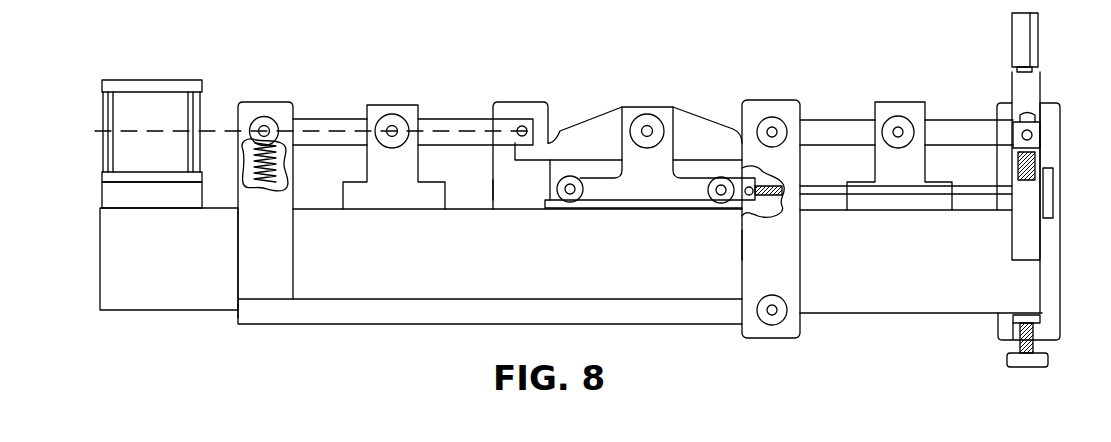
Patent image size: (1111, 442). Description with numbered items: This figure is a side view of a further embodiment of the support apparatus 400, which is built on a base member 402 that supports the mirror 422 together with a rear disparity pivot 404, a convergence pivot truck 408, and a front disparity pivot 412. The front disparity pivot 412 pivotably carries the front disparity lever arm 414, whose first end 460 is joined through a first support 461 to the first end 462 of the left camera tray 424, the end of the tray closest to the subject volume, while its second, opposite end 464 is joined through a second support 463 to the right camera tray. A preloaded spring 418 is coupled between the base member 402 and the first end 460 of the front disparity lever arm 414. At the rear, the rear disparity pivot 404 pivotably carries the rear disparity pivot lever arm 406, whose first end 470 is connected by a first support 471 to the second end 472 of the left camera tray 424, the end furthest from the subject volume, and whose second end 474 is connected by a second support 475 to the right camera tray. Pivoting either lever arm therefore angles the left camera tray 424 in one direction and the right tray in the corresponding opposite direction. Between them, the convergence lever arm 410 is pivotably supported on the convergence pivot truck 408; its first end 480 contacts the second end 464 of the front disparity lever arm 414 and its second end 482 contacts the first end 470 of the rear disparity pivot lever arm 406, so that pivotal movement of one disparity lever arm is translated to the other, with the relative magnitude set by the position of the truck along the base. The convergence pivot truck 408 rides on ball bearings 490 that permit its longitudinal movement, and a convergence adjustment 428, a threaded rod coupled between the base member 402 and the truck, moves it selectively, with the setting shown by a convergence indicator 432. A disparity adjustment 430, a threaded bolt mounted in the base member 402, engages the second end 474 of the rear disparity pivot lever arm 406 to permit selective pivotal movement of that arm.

The support apparatus 400 is at (862, 344).
The base member 402 is at (942, 301).
The rear disparity pivot 404 is at (912, 96).
The rear disparity pivot lever arm 406 is at (842, 113).
The convergence pivot truck 408 is at (626, 101).
The convergence lever arm 410 is at (584, 110).
The front disparity pivot 412 is at (391, 104).
The front disparity lever arm 414 is at (346, 112).
The preloaded spring 418 is at (252, 145).
The mirror 422 is at (133, 148).
The left camera tray 424 is at (262, 324).
The convergence adjustment 428 is at (1055, 180).
The disparity adjustment 430 is at (1048, 362).
The convergence indicator 432 is at (1039, 24).
The first end of front disparity lever arm 460 is at (266, 110).
The first support 461 is at (274, 237).
The first end of left camera tray 462 is at (246, 312).
The second support 463 is at (493, 187).
The second end of front disparity lever arm 464 is at (512, 122).
The first end of rear disparity lever arm 470 is at (787, 110).
The first support 471 is at (780, 247).
The second end of left camera tray 472 is at (757, 328).
The second end of rear disparity lever arm 474 is at (1029, 125).
The second support 475 is at (1056, 141).
The first end of convergence lever arm 480 is at (541, 152).
The second end of convergence lever arm 482 is at (711, 137).
The ball bearings 490 is at (568, 203).